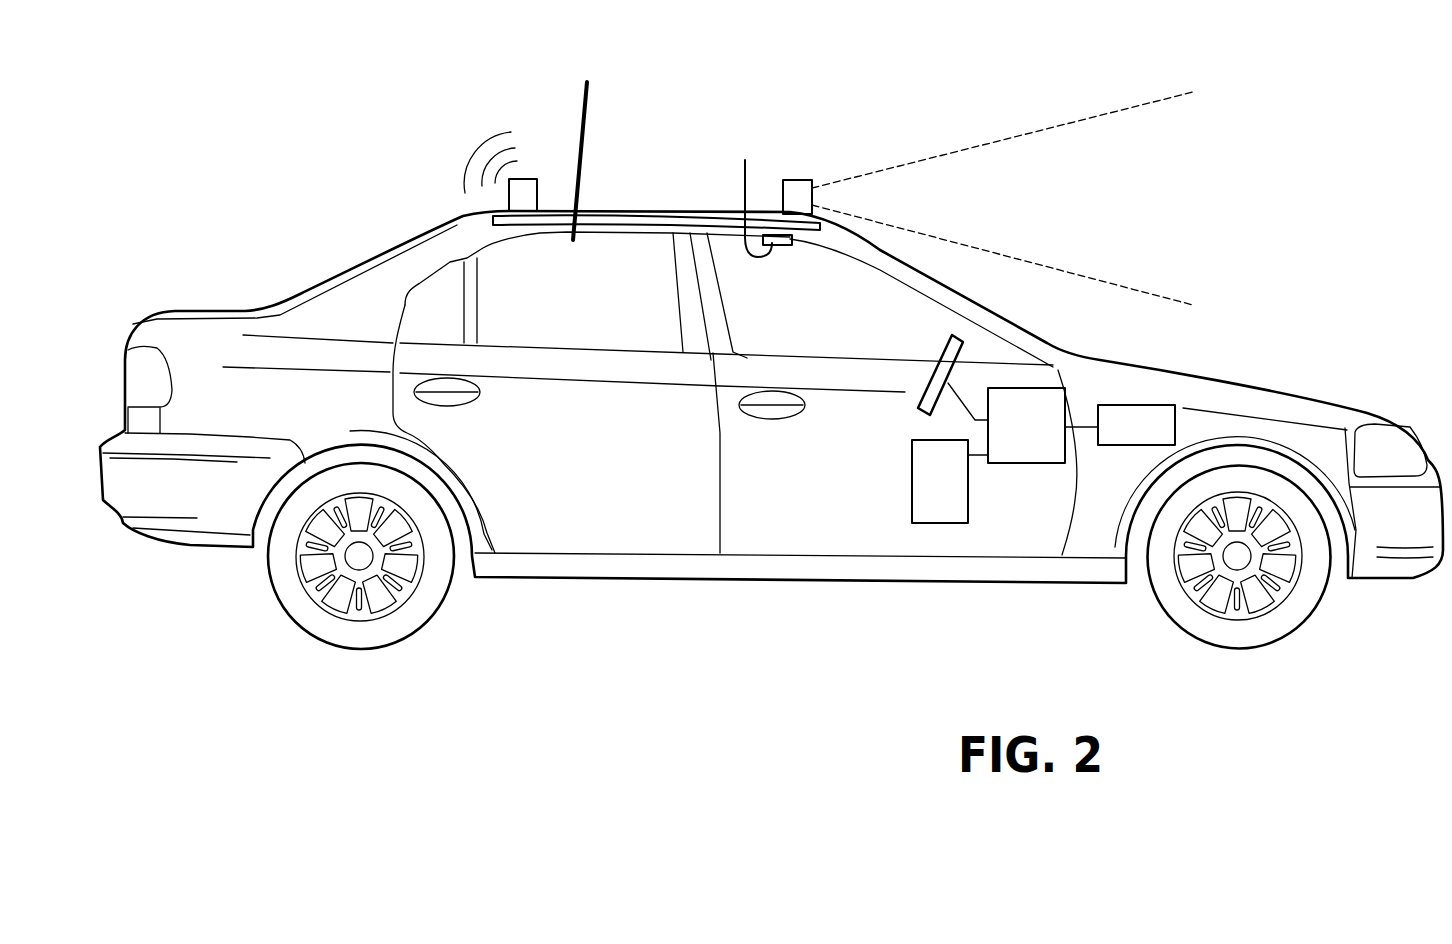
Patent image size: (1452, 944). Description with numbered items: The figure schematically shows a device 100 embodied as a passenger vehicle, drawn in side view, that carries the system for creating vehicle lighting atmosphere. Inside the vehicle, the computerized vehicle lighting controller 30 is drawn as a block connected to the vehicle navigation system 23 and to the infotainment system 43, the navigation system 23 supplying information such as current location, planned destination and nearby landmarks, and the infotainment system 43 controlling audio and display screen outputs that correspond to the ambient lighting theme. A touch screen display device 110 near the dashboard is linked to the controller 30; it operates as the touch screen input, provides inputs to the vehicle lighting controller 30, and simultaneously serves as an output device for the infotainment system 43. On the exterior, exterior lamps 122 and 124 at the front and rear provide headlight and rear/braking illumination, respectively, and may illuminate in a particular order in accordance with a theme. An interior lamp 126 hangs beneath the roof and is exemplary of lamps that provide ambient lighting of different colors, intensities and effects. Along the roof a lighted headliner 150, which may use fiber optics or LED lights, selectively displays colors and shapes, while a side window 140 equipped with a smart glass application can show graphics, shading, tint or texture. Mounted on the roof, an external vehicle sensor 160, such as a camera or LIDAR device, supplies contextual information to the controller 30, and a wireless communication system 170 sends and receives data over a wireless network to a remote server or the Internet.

The device 100 is at (632, 207).
The touch screen display device 110 is at (963, 347).
The exterior lamp 122 is at (1400, 447).
The exterior lamp 124 is at (137, 362).
The interior lamp 126 is at (757, 195).
The side window 140 is at (581, 145).
The lighted headliner 150 is at (705, 222).
The external vehicle sensor 160 is at (800, 178).
The wireless communication system 170 is at (525, 178).
The vehicle lighting controller 30 is at (1039, 437).
The vehicle navigation system 23 is at (1149, 437).
The infotainment system 43 is at (953, 492).